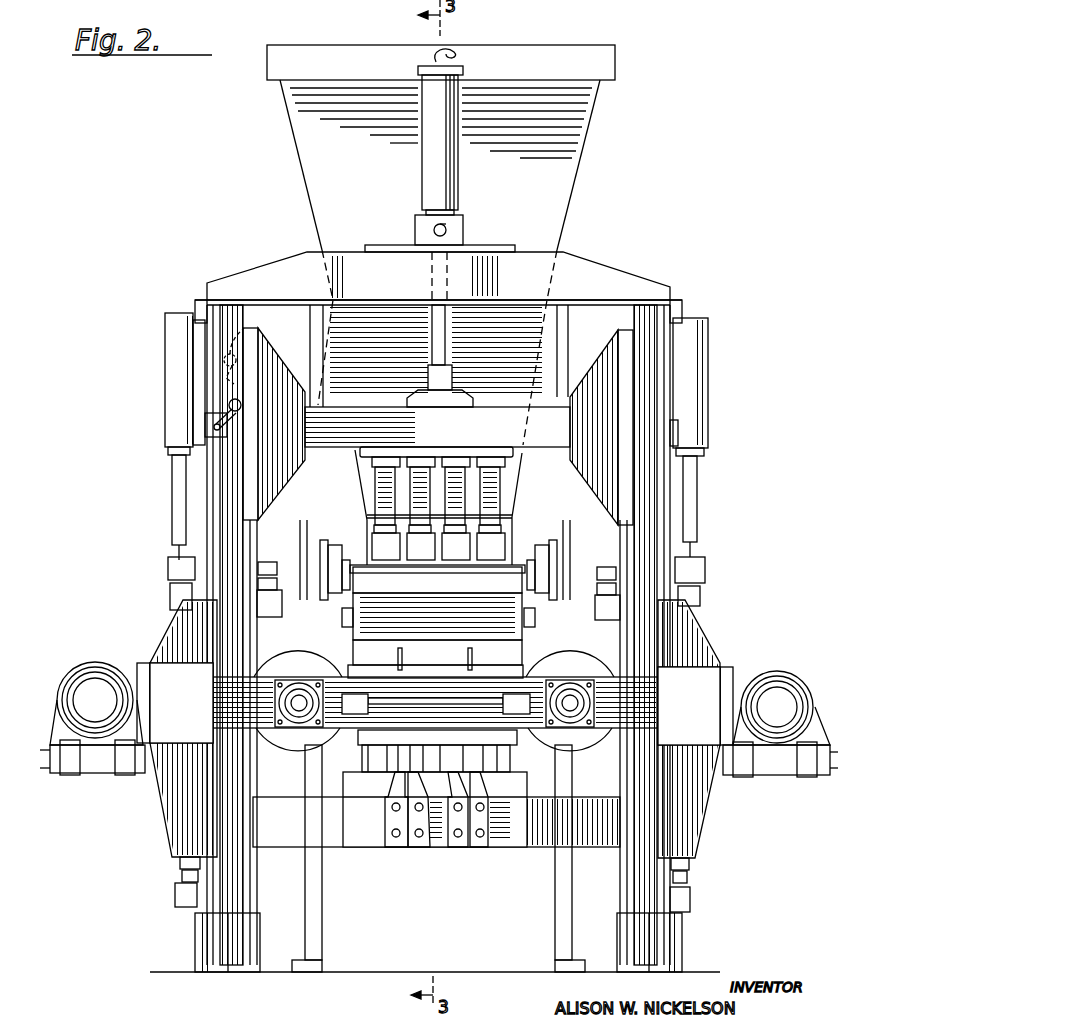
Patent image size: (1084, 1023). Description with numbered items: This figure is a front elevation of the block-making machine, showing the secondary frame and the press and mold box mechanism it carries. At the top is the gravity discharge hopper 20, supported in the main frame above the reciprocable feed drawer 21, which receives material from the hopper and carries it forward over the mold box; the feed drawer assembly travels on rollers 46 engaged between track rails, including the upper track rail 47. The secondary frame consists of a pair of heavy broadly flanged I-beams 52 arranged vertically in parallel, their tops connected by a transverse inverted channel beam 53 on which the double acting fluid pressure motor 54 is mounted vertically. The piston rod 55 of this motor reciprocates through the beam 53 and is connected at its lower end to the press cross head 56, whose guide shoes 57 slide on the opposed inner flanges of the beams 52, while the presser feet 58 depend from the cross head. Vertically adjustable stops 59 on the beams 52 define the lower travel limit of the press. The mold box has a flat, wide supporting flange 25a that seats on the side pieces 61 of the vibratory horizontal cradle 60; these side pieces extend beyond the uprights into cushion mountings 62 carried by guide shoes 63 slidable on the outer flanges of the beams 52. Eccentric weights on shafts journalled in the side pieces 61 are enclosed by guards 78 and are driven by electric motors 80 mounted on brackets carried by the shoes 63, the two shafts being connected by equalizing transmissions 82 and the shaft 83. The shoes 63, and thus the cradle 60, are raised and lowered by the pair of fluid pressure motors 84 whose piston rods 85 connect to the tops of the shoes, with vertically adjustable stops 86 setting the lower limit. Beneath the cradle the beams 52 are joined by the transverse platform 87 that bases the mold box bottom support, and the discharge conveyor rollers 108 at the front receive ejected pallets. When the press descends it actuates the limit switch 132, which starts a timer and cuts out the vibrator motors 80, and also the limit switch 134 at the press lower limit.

The gravity discharge hopper 20 is at (298, 117).
The double acting fluid pressure motor 54 is at (428, 133).
The transverse inverted channel beam 53 is at (492, 308).
The piston rod 55 is at (432, 335).
The press cross head 56 is at (375, 407).
The guide shoes 57 is at (300, 352).
The presser feet 58 is at (378, 478).
The limit switch 134 is at (252, 325).
The limit switch 132 is at (212, 426).
The double acting fluid pressure motors 84 is at (175, 346).
The piston rod 85 is at (186, 474).
The vertically adjustable stops 59 is at (270, 562).
The upper track rail 47 is at (327, 546).
The rollers 46 is at (340, 556).
The vibratory horizontal cradle 60 is at (417, 682).
The supporting flange 25a is at (378, 672).
The reciprocable feed drawer 21 is at (512, 635).
The side pieces 61 is at (244, 714).
The shaft 83 is at (481, 700).
The transmissions 82 is at (282, 680).
The guards 78 is at (295, 655).
The cushion mountings 62 is at (157, 680).
The guide shoes 63 is at (169, 643).
The electric motor 80 is at (95, 666).
The vertically adjustable stops 86 is at (180, 877).
The I-beams 52 is at (240, 898).
The transverse platform 87 is at (535, 848).
The discharge conveyor rollers 108 is at (390, 787).